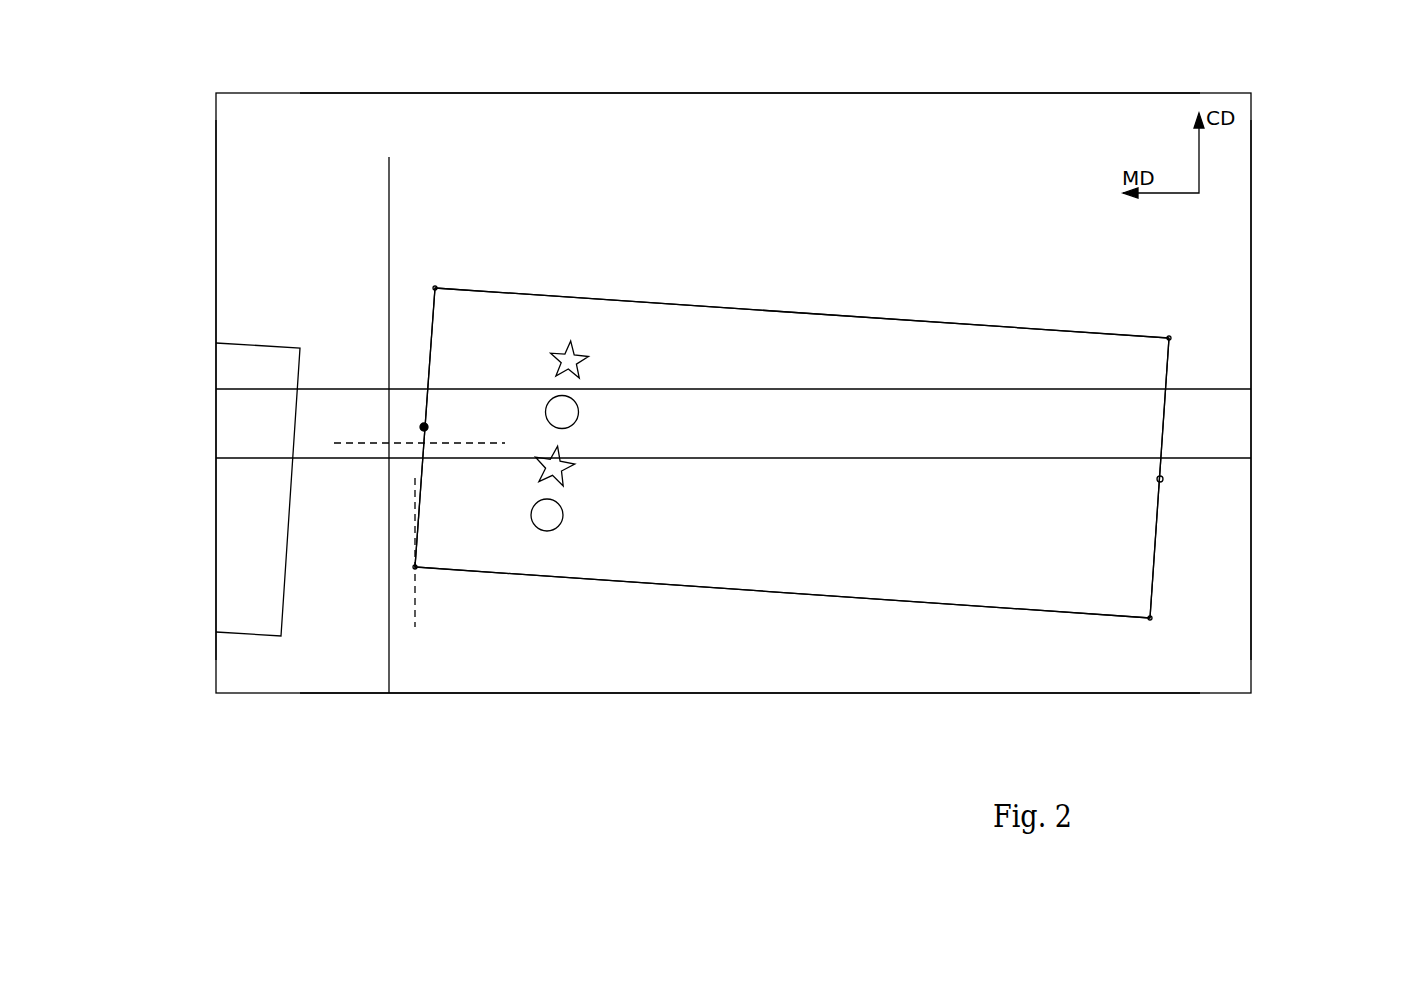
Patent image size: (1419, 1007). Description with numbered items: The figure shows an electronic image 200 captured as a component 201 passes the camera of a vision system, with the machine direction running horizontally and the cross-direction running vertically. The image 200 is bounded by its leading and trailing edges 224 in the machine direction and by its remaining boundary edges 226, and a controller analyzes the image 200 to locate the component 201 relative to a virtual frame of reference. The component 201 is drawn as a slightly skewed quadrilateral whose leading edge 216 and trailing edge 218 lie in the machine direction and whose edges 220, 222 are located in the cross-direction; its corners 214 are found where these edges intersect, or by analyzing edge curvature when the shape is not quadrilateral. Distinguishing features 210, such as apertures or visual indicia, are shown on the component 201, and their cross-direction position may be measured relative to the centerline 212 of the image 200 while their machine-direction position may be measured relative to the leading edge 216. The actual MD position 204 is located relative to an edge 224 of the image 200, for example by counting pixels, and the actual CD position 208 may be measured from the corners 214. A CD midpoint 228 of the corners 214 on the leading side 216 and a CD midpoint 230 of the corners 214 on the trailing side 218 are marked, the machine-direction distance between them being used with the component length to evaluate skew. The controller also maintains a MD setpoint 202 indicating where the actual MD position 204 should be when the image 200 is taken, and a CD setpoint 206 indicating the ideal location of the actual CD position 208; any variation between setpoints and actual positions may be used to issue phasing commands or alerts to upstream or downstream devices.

The electronic image 200 is at (330, 93).
The component 201 is at (915, 320).
The MD setpoint 202 is at (417, 410).
The actual MD position 204 is at (530, 568).
The CD setpoint 206 is at (1187, 458).
The actual CD position 208 is at (358, 445).
The distinguishing features 210 is at (573, 342).
The centerline 212 is at (1193, 389).
The corners 214 is at (435, 290).
The leading edge 216 is at (433, 334).
The trailing edge 218 is at (1153, 575).
The cross-direction edge 220 is at (731, 307).
The cross-direction edge 222 is at (763, 592).
The edge of image 224 is at (216, 263).
The top and bottom edges of field of view 226 is at (665, 93).
The CD midpoint 228 is at (428, 425).
The CD midpoint 230 is at (1157, 482).